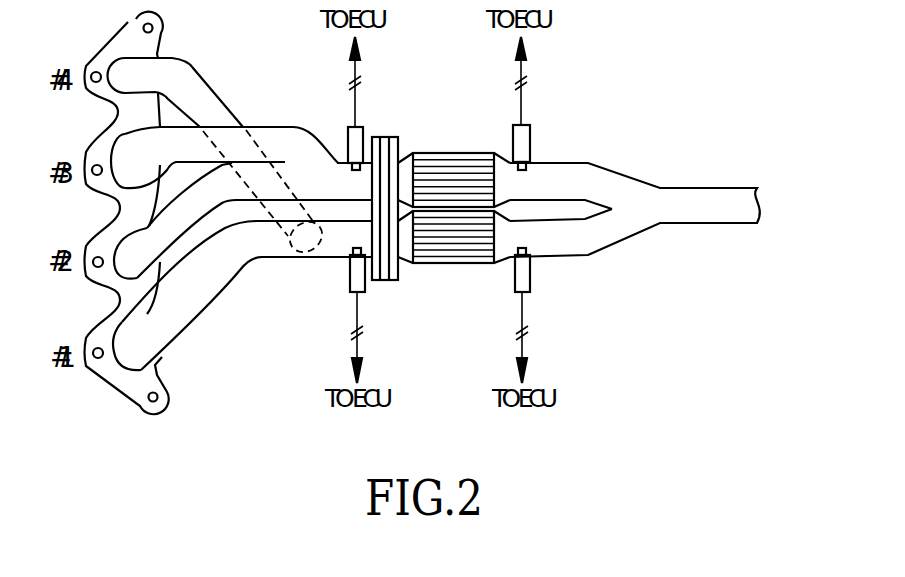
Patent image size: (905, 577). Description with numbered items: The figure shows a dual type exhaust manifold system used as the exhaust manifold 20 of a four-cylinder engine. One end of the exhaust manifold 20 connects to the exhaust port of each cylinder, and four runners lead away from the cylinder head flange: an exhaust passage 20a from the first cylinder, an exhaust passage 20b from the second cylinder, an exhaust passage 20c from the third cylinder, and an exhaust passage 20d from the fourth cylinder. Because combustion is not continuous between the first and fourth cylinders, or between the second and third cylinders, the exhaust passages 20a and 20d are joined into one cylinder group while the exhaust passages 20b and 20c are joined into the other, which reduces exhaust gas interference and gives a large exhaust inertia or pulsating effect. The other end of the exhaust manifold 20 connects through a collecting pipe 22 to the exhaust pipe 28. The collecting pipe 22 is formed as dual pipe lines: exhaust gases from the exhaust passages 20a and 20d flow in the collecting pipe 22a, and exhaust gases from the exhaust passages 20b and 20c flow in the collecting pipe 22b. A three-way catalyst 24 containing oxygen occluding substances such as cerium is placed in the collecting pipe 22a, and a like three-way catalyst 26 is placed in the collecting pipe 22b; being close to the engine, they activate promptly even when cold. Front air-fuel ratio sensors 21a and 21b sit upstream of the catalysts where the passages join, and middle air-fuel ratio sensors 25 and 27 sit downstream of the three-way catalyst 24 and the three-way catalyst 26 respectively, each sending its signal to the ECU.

The exhaust manifold 20 is at (213, 315).
The exhaust passage 20a is at (147, 328).
The exhaust passage 20b is at (147, 235).
The exhaust passage 20c is at (143, 148).
The exhaust passage 20d is at (185, 67).
The front air-fuel ratio sensor 21a is at (350, 278).
The front air-fuel ratio sensor 21b is at (348, 137).
The collecting pipe 22 is at (547, 147).
The collecting pipe 22a is at (563, 257).
The collecting pipe 22b is at (588, 163).
The three-way catalyst 24 is at (431, 264).
The middle air-fuel ratio sensor 25 is at (517, 280).
The three-way catalyst 26 is at (437, 154).
The middle air-fuel ratio sensor 27 is at (516, 133).
The exhaust pipe 28 is at (728, 222).